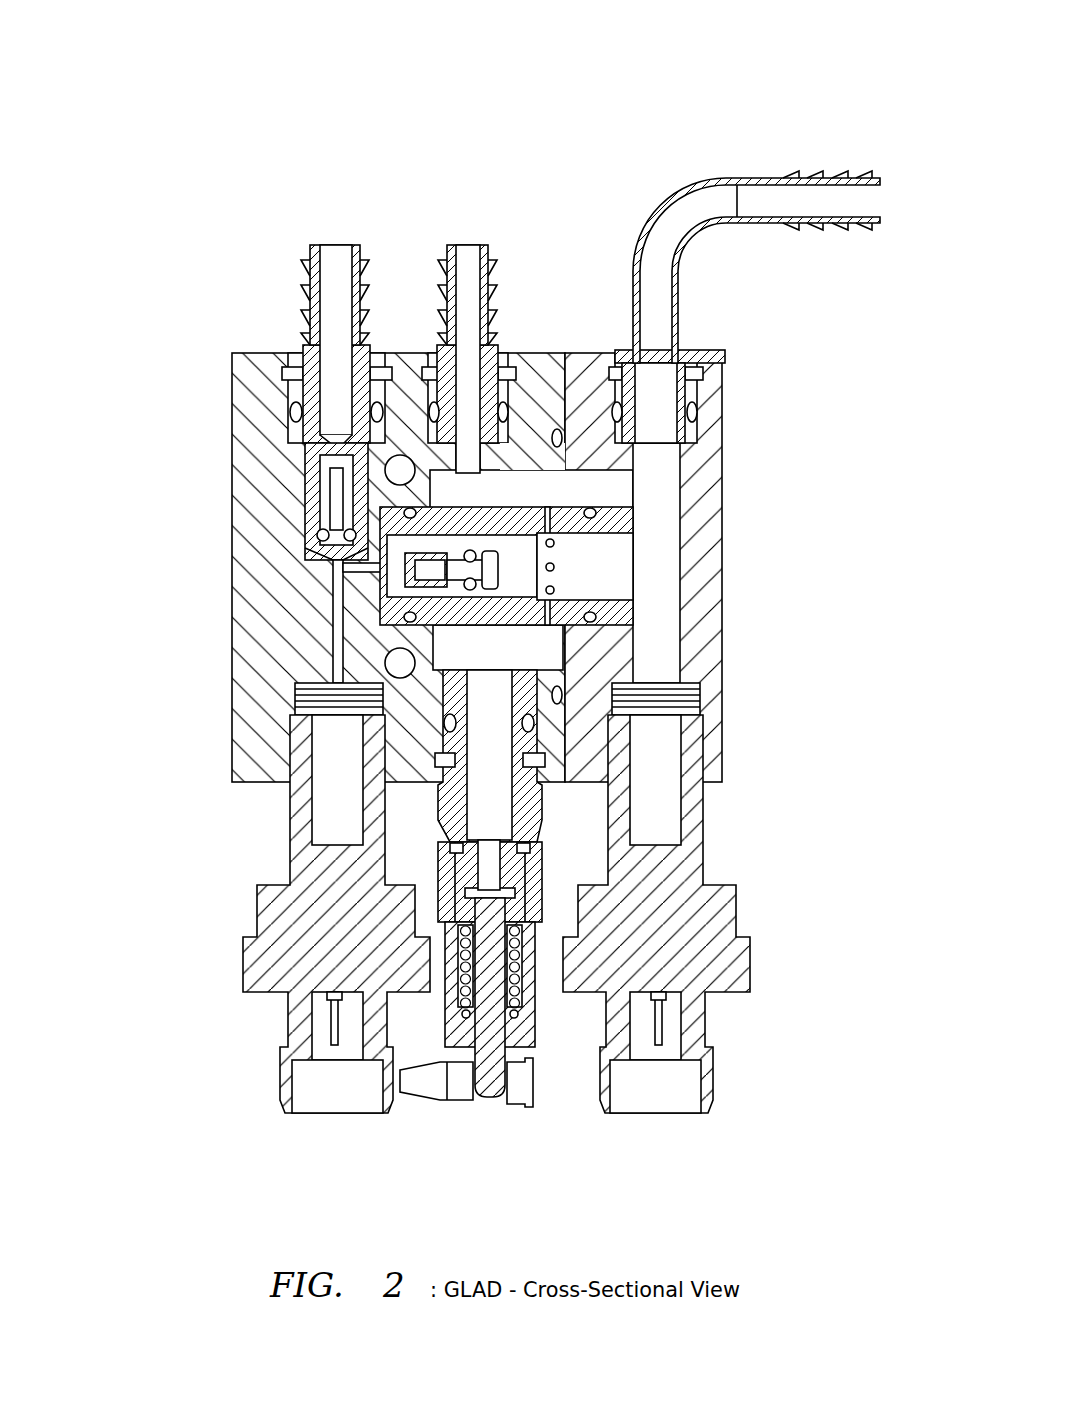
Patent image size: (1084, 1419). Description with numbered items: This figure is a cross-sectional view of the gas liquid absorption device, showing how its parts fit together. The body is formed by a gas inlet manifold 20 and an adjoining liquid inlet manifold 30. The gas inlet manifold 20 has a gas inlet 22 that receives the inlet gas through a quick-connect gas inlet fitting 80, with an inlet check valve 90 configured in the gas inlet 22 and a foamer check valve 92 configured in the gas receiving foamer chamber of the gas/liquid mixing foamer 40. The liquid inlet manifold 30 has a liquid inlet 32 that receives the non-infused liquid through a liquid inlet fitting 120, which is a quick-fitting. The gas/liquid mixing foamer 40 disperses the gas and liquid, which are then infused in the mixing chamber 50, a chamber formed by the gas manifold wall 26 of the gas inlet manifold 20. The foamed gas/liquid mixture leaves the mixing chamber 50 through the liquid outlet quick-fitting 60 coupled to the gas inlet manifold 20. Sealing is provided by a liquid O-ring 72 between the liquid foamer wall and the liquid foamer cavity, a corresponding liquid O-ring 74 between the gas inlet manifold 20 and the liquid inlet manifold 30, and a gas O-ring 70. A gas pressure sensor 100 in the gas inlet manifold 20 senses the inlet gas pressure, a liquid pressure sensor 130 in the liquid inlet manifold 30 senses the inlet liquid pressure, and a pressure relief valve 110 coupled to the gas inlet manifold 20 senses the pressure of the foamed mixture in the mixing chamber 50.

The gas inlet manifold 20 is at (232, 390).
The gas inlet 22 is at (307, 568).
The gas manifold wall 26 is at (528, 468).
The liquid inlet manifold 30 is at (728, 380).
The liquid inlet 32 is at (675, 462).
The gas/liquid mixing foamer 40 is at (523, 497).
The mixing chamber 50 is at (525, 572).
The liquid outlet quick-fitting 60 is at (468, 243).
The Gas O-ring 70 is at (400, 622).
The liquid O-ring 72 is at (597, 513).
The liquid O-ring 74 is at (567, 442).
The gas inlet fitting 80 is at (318, 455).
The inlet check valve 90 is at (305, 487).
The foamer check valve 92 is at (400, 570).
The gas pressure sensor 100 is at (250, 920).
The pressure relief valve 110 is at (483, 1112).
The liquid inlet fitting 120 is at (800, 178).
The liquid pressure sensor 130 is at (745, 925).